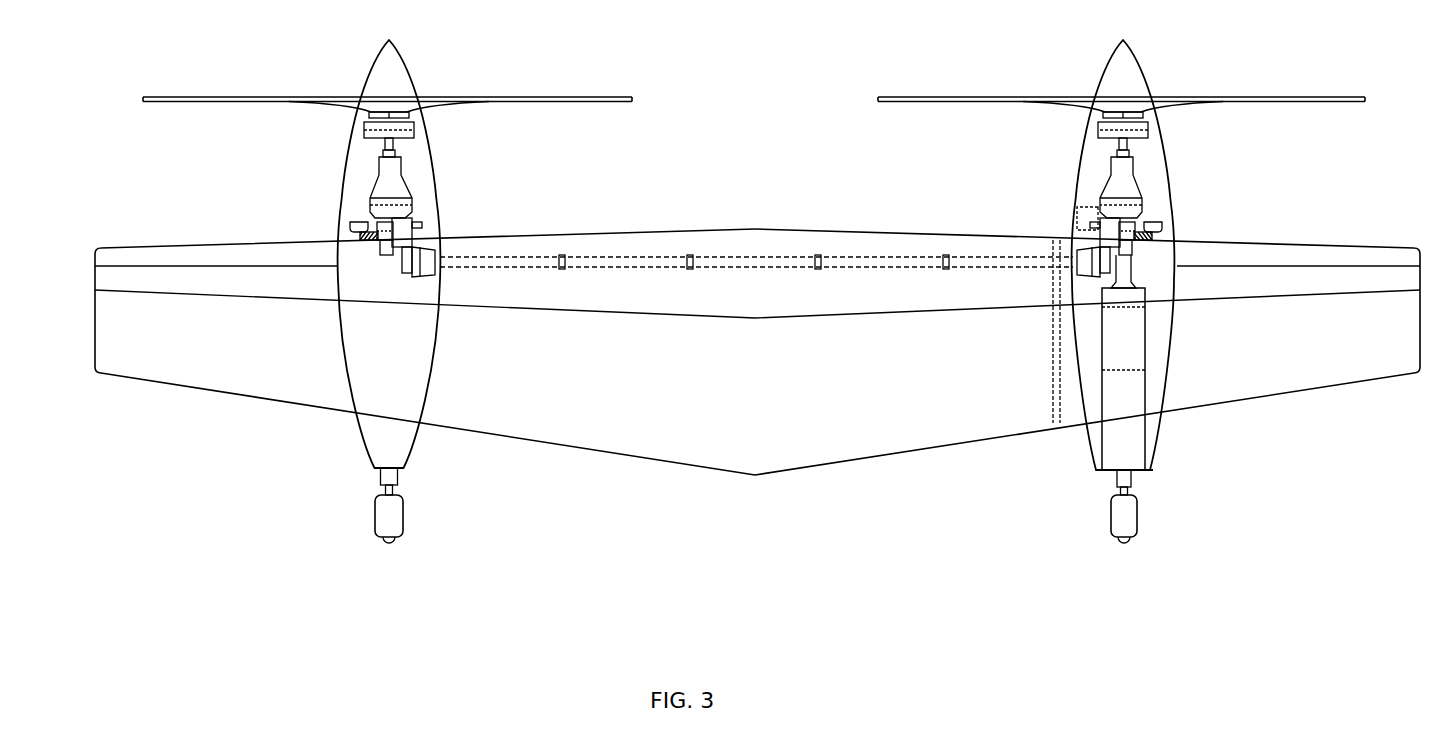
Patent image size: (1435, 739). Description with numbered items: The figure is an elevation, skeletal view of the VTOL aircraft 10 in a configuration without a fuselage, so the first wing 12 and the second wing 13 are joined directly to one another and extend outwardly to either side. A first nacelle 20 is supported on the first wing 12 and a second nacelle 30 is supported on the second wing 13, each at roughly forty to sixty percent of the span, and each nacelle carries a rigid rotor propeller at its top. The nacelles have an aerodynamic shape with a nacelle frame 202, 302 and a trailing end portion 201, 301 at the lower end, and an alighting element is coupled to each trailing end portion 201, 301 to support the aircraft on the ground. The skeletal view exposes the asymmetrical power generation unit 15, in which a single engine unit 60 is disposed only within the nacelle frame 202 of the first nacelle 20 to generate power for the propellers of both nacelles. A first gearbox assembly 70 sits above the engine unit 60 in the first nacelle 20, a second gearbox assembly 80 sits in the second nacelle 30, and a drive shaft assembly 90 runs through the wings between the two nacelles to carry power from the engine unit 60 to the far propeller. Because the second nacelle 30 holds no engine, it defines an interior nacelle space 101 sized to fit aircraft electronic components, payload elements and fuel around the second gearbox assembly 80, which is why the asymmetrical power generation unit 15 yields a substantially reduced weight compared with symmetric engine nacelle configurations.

The aircraft 10 is at (720, 527).
The first wing 12 is at (1345, 365).
The second wing 13 is at (105, 323).
The asymmetrical power generation unit 15 is at (737, 252).
The first nacelle 20 is at (1163, 385).
The second nacelle 30 is at (360, 398).
The engine unit 60 is at (1123, 333).
The first gearbox assembly 70 is at (1120, 205).
The second gearbox assembly 80 is at (392, 200).
The drive shaft assembly 90 is at (890, 248).
The interior nacelle space 101 is at (373, 363).
The trailing end portion 201 is at (1103, 470).
The nacelle frame 202 is at (1085, 373).
The trailing end portion 301 is at (403, 467).
The nacelle frame 302 is at (343, 232).